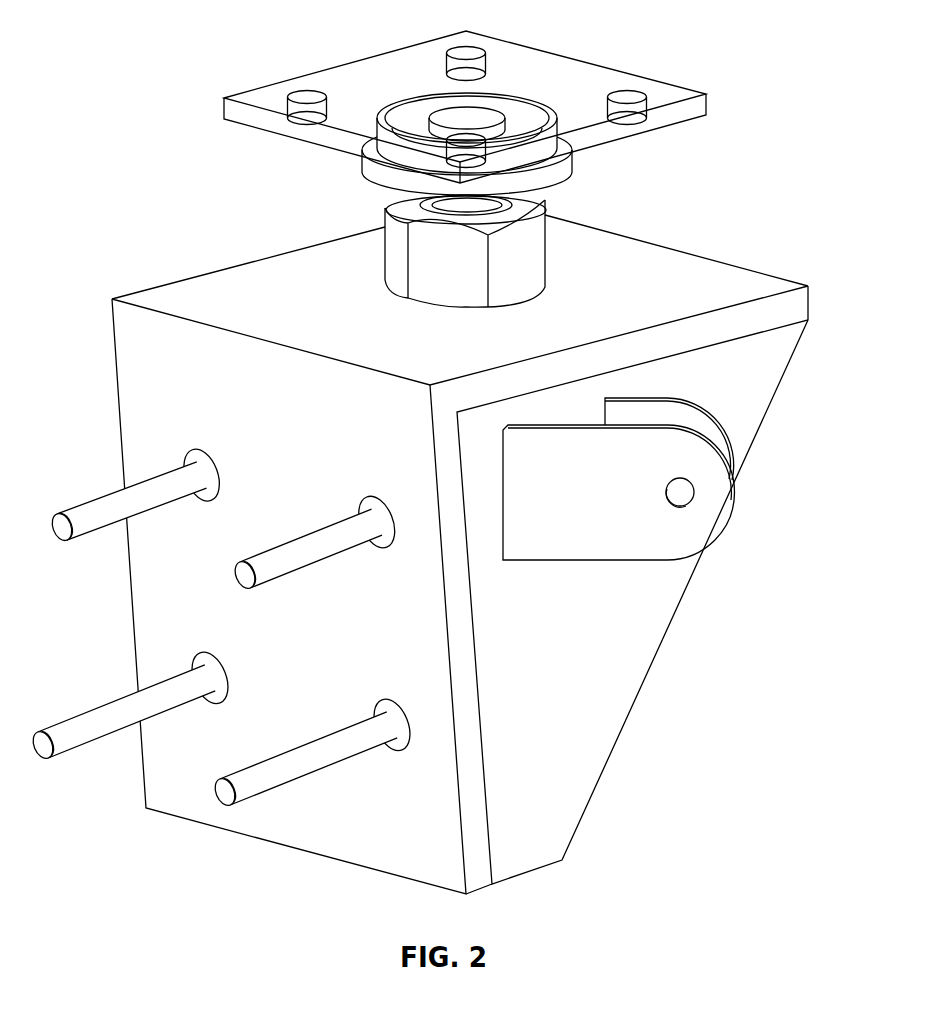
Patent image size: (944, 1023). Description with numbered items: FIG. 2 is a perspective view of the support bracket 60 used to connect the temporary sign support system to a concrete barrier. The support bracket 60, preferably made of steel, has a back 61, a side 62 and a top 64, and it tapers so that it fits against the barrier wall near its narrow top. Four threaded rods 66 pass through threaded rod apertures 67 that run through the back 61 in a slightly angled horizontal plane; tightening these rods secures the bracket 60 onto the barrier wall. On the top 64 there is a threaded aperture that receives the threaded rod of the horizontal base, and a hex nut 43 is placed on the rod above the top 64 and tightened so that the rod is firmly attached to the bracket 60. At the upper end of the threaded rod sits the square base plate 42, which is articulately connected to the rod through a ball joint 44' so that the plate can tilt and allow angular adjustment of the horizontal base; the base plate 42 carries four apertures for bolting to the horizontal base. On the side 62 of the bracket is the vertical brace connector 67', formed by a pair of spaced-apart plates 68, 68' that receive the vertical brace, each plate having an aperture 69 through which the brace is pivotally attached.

The base plate 42 is at (367, 56).
The ball joint 44' is at (467, 98).
The hex nut 43 is at (535, 237).
The support bracket 60 is at (478, 494).
The top 64 is at (262, 268).
The back 61 is at (135, 382).
The side 62 is at (632, 590).
The threaded rods 66 is at (47, 730).
The threaded rod apertures 67 is at (287, 600).
The vertical brace connector 67' is at (685, 480).
The plate 68 is at (651, 502).
The plate 68' is at (721, 420).
The aperture 69 is at (683, 493).